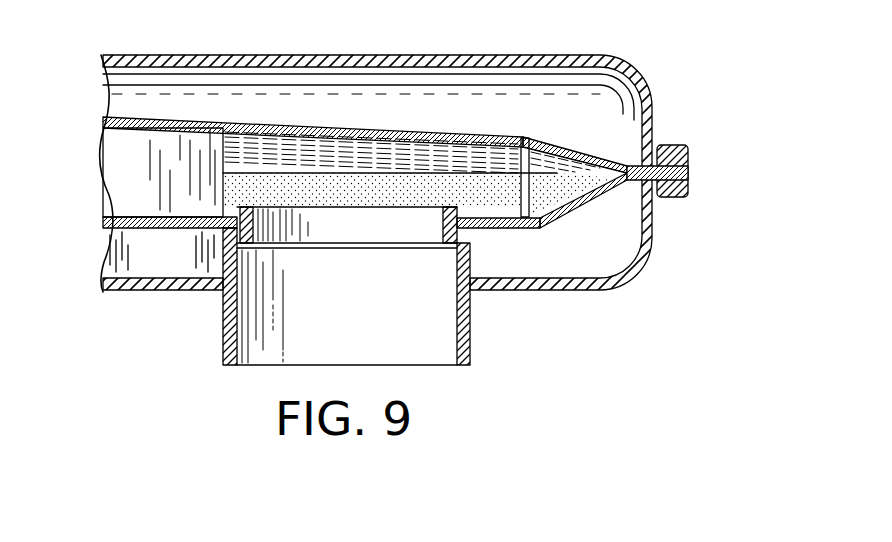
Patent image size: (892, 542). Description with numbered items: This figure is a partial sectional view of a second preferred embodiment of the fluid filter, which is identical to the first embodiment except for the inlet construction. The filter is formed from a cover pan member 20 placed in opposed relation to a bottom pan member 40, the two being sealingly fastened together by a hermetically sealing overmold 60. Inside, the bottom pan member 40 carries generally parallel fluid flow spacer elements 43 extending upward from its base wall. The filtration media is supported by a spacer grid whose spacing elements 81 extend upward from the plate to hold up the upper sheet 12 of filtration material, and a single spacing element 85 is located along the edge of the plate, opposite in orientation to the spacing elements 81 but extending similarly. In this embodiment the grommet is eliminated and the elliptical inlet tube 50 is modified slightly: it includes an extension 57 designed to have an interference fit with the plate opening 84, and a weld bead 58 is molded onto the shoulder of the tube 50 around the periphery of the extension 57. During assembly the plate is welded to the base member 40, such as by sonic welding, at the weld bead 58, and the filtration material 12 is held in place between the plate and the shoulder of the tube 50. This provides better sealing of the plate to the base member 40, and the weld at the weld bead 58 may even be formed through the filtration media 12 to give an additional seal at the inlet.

The cover pan member 20 is at (409, 203).
The bottom pan member 40 is at (622, 293).
The upper sheet 12 is at (493, 234).
The spacing elements 81 is at (118, 167).
The fluid flow spacer elements 43 is at (113, 253).
The plate opening 84 is at (280, 232).
The single spacing element 85 is at (527, 180).
The extension 57 is at (445, 218).
The weld bead 58 is at (250, 245).
The inlet tube 50 is at (473, 333).
The overmold 60 is at (692, 172).